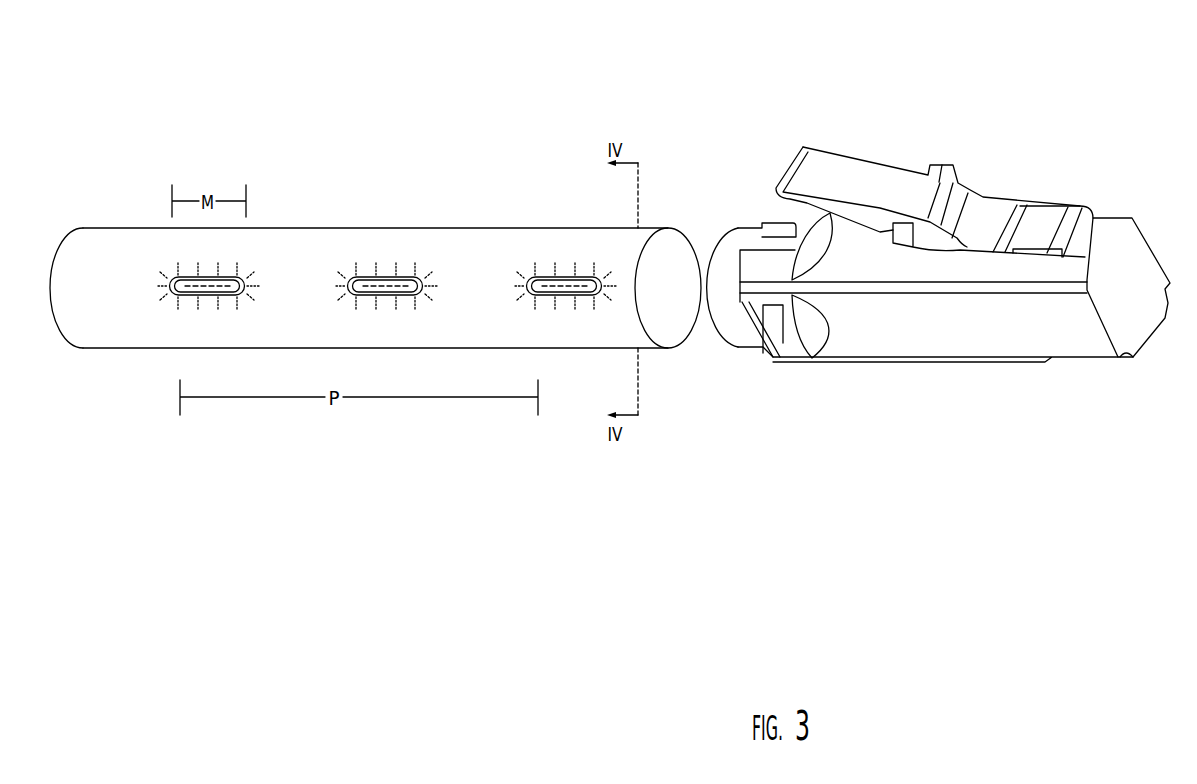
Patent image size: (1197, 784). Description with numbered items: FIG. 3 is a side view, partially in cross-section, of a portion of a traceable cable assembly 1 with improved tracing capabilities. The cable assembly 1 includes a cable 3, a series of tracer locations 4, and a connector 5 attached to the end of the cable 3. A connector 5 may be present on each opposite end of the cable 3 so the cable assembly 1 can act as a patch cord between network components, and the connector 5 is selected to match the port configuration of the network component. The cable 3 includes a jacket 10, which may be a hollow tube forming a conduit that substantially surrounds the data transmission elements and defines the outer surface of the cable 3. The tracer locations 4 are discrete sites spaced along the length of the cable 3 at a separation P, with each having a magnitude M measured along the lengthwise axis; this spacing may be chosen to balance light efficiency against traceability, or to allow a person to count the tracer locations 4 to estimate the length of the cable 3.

The cable assembly 1 is at (563, 76).
The cable 3 is at (280, 167).
The tracer locations 4 is at (542, 285).
The connector 5 is at (928, 323).
The jacket 10 is at (125, 344).